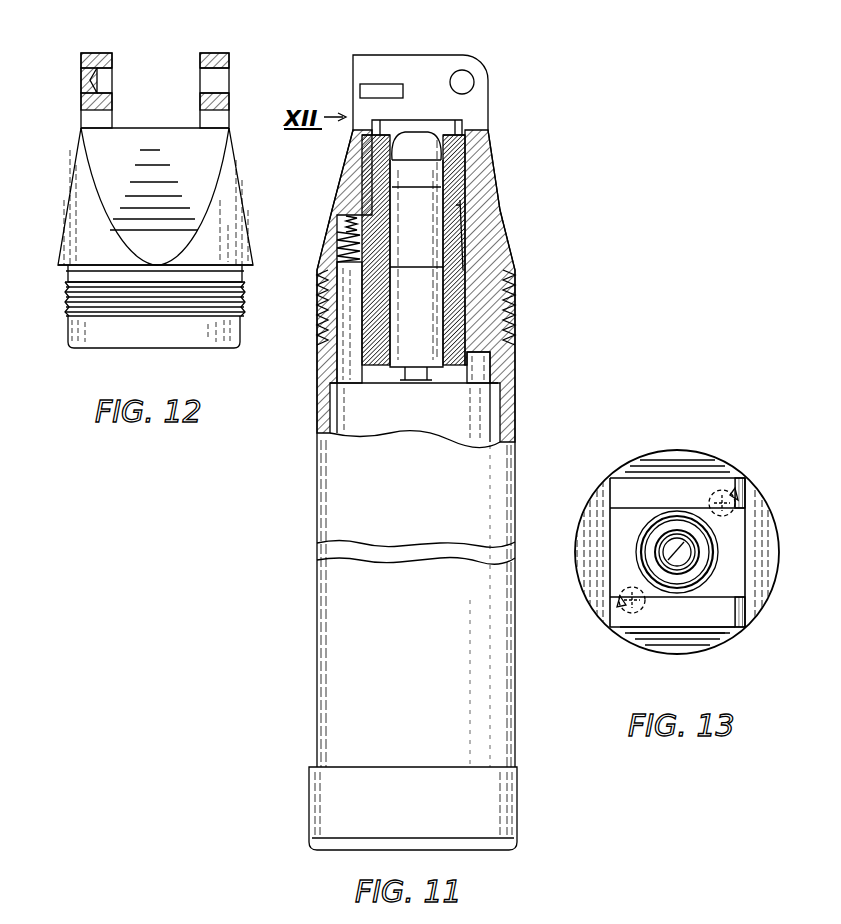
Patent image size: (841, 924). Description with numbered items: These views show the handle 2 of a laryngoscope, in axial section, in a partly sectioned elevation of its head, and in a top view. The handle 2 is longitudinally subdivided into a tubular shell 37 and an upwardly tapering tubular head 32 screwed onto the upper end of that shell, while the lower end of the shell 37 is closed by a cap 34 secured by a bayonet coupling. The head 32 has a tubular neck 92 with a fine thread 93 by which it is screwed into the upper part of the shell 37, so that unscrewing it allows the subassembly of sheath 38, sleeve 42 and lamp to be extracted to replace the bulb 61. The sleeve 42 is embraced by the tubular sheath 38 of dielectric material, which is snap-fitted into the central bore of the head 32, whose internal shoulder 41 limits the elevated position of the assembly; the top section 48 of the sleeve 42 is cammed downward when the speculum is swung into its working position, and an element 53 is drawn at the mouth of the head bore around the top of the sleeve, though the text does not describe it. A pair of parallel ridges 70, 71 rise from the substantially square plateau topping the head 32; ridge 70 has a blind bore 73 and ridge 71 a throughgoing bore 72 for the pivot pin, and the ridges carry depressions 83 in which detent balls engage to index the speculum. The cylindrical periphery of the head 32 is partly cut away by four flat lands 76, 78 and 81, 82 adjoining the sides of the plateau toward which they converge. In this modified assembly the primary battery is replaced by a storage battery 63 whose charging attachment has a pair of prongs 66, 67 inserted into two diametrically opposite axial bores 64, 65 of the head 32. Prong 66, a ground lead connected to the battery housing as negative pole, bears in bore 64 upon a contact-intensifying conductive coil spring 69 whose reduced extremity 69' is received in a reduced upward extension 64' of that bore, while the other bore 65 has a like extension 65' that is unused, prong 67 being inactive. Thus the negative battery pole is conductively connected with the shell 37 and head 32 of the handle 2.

In FIG. 11, the handle 2 is at (313, 568).
In FIG. 12, the head 32 is at (190, 348).
In FIG. 11, the head 32 is at (495, 220).
In FIG. 13, the head 32 is at (590, 596).
In FIG. 11, the cap 34 is at (503, 808).
In FIG. 11, the tubular shell 37 is at (322, 630).
In FIG. 11, the tubular sheath 38 is at (466, 260).
In FIG. 11, the internal shoulder 41 is at (462, 186).
In FIG. 11, the sleeve 42 is at (430, 318).
In FIG. 11, the top section of sleeve 48 is at (424, 132).
In FIG. 13, the top section of sleeve 48 is at (677, 520).
In FIG. 11, the ring 53 is at (462, 125).
In FIG. 13, the ring 53 is at (700, 590).
In FIG. 13, the bulb 61 is at (665, 548).
In FIG. 11, the storage battery 63 is at (345, 410).
In FIG. 13, the axially extending bore 64 is at (628, 639).
In FIG. 13, the reduced upward extension of bore 64' is at (601, 634).
In FIG. 13, the axially extending bore 65 is at (721, 464).
In FIG. 13, the reduced upward extension of bore 65' is at (753, 465).
In FIG. 11, the prong 66 is at (340, 320).
In FIG. 11, the prong 67 is at (490, 366).
In FIG. 11, the conductive coil spring 69 is at (320, 247).
In FIG. 11, the reduced extremity of coil spring 69' is at (319, 221).
In FIG. 12, the ridge 70 is at (97, 53).
In FIG. 11, the ridge 70 is at (440, 62).
In FIG. 13, the ridge 70 is at (625, 485).
In FIG. 12, the ridge 71 is at (216, 53).
In FIG. 13, the ridge 71 is at (735, 622).
In FIG. 12, the throughgoing bore 72 is at (222, 80).
In FIG. 12, the blind bore 73 is at (105, 80).
In FIG. 11, the blind bore 73 is at (475, 85).
In FIG. 12, the flat land 76 is at (70, 190).
In FIG. 13, the flat land 76 is at (676, 462).
In FIG. 12, the flat land 78 is at (238, 183).
In FIG. 13, the flat land 78 is at (677, 646).
In FIG. 12, the flat land 81 is at (154, 140).
In FIG. 11, the flat land 81 is at (345, 172).
In FIG. 13, the flat land 81 is at (588, 537).
In FIG. 11, the flat land 82 is at (500, 198).
In FIG. 13, the flat land 82 is at (762, 525).
In FIG. 11, the depression 83 is at (360, 88).
In FIG. 12, the tubular neck 92 is at (102, 336).
In FIG. 12, the fine thread 93 is at (65, 292).